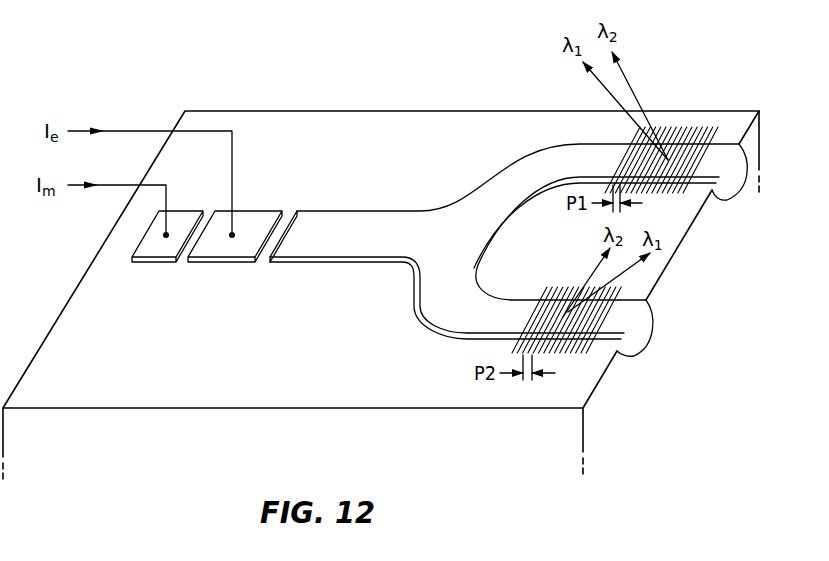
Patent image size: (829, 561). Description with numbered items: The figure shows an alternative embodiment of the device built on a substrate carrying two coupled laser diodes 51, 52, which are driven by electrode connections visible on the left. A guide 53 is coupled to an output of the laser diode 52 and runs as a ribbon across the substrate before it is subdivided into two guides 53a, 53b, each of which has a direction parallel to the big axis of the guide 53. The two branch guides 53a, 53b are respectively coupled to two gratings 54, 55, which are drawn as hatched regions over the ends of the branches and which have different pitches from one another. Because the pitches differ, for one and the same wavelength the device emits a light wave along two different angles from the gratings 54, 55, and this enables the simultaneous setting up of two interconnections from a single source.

The coupled laser diode 51 is at (153, 252).
The coupled laser diode 52 is at (232, 252).
The guide 53 is at (508, 250).
The guide 53a is at (723, 190).
The guide 53b is at (638, 328).
The grating 54 is at (583, 352).
The grating 55 is at (685, 133).